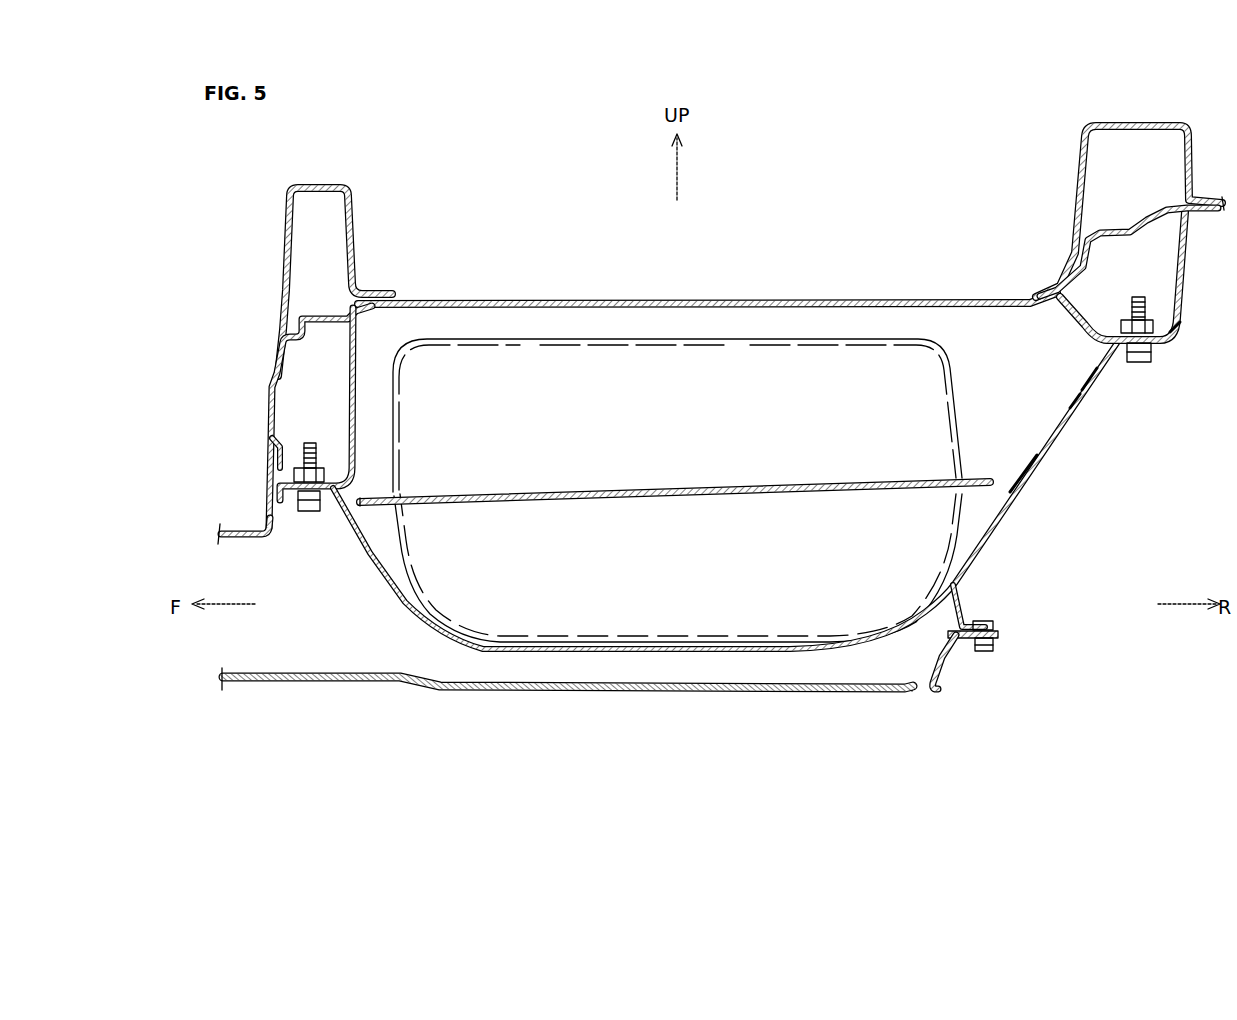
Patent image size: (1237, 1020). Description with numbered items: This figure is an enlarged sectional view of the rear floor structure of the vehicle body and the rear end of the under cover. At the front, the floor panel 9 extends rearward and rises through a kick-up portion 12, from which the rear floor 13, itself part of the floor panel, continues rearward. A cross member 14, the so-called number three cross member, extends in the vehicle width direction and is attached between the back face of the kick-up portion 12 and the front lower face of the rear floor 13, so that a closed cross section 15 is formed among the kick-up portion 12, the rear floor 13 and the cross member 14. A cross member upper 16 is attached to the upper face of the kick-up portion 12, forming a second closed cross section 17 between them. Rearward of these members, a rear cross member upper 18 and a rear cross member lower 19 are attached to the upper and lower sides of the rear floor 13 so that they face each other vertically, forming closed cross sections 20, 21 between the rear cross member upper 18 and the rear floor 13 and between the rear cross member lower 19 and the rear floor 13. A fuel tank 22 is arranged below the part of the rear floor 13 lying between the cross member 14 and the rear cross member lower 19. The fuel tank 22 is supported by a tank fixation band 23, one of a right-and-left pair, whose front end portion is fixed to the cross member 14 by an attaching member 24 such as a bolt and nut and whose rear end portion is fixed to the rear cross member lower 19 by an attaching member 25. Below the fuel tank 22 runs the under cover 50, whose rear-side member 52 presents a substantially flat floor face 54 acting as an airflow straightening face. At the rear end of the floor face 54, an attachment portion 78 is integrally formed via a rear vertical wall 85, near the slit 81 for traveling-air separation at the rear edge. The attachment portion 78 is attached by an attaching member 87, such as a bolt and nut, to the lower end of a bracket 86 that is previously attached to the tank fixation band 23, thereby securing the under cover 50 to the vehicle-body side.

The floor panel 9 is at (237, 530).
The kick-up portion 12 is at (272, 375).
The rear floor 13 is at (568, 298).
The cross member 14 is at (356, 406).
The closed cross section 15 is at (308, 403).
The cross member upper 16 is at (287, 197).
The closed cross section 17 is at (318, 252).
The rear cross member upper 18 is at (1083, 147).
The rear cross member lower 19 is at (1181, 262).
The closed cross section 20 is at (1143, 169).
The closed cross section 21 is at (1143, 266).
The fuel tank 22 is at (967, 421).
The tank fixation band 23 is at (1013, 498).
The attaching member 24 is at (309, 512).
The attaching member 25 is at (1136, 364).
The under cover 50 is at (336, 686).
The rear-side member 52 is at (489, 692).
The floor face 54 is at (652, 694).
The attachment portion 78 is at (996, 647).
The slit 81 is at (915, 693).
The rear vertical wall 85 is at (950, 675).
The bracket 86 is at (960, 600).
The attaching member 87 is at (985, 625).